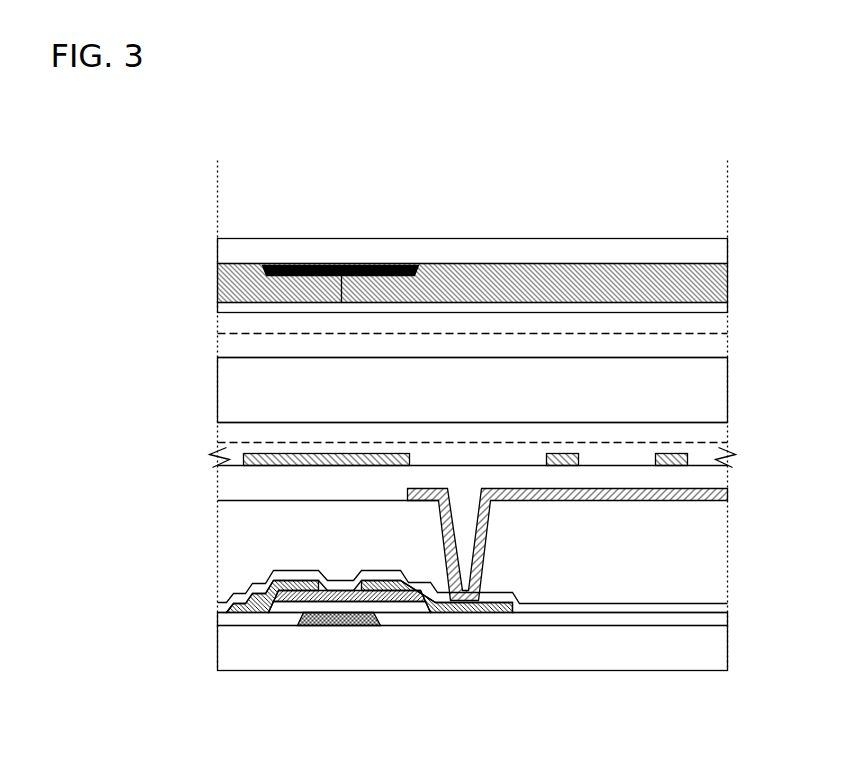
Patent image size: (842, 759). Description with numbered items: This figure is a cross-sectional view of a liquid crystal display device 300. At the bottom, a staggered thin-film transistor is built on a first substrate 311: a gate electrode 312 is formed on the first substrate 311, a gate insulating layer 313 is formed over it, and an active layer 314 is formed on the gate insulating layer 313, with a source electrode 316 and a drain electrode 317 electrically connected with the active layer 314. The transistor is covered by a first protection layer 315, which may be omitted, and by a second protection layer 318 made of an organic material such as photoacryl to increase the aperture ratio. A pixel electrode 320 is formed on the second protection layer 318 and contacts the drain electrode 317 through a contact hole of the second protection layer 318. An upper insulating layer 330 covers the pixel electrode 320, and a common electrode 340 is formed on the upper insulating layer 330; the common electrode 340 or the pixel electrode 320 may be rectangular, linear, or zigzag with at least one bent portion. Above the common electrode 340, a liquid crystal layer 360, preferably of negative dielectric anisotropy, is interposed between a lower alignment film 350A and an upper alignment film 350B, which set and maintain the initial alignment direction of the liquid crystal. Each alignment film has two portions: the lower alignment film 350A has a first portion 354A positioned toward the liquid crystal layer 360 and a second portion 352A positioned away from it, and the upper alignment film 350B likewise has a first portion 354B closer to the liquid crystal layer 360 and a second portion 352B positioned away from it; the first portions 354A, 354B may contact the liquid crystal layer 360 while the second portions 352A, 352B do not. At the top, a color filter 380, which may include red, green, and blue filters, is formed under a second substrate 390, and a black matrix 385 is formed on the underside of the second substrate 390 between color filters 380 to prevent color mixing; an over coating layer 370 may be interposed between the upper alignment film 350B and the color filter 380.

The liquid crystal display device 300 is at (769, 130).
The first substrate 311 is at (236, 652).
The gate electrode 312 is at (326, 626).
The gate insulating layer 313 is at (230, 622).
The active layer 314 is at (343, 592).
The first protection layer 315 is at (226, 606).
The source electrode 316 is at (272, 614).
The drain electrode 317 is at (432, 612).
The second protection layer 318 is at (228, 533).
The pixel electrode 320 is at (407, 489).
The upper insulating layer 330 is at (228, 478).
The common electrode 340 is at (232, 455).
The lower alignment film 350A is at (130, 402).
The second portion of the lower alignment film 352A is at (234, 446).
The first portion of the lower alignment film 354A is at (237, 423).
The upper alignment film 350B is at (134, 320).
The second portion of the upper alignment film 352B is at (226, 332).
The first portion of the upper alignment film 354B is at (226, 356).
The liquid crystal layer 360 is at (228, 372).
The over coating layer 370 is at (226, 302).
The color filter 380 is at (405, 286).
The black matrix 385 is at (270, 267).
The second substrate 390 is at (228, 245).